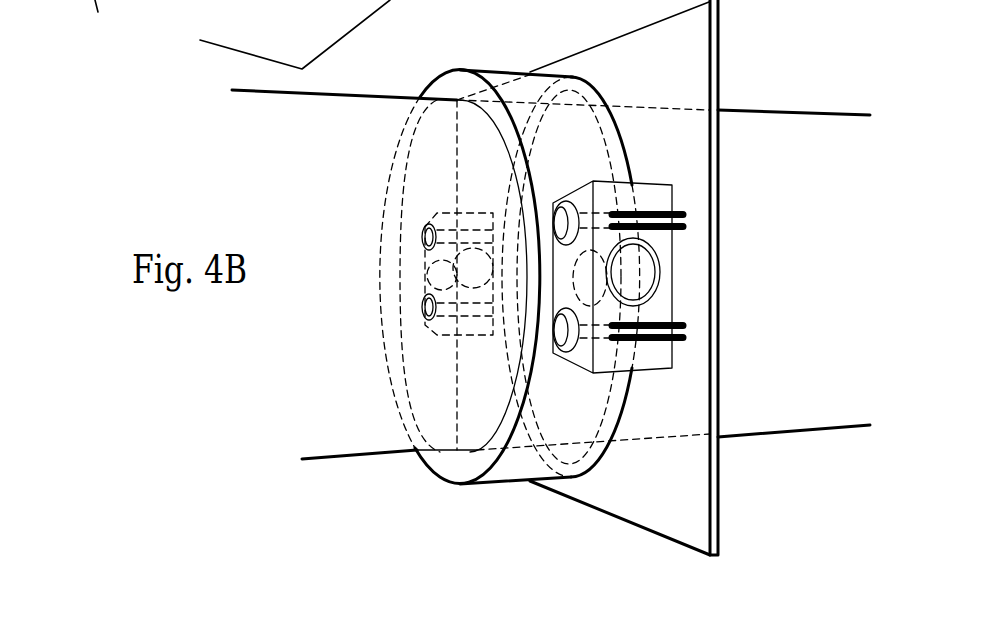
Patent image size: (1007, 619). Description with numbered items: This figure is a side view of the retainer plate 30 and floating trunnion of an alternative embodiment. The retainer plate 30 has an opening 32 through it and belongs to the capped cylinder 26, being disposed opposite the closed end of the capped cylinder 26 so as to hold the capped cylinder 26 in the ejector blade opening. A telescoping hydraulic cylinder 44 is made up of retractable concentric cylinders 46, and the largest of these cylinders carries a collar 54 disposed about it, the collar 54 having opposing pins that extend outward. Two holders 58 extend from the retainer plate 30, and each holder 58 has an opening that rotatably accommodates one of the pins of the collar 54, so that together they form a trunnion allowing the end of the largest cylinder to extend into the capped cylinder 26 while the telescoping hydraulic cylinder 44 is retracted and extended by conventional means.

The capped cylinder 26 is at (793, 110).
The retainer plate 30 is at (686, 77).
The opening 32 is at (593, 427).
The telescoping hydraulic cylinder 44 is at (362, 458).
The retractable concentric cylinders 46 is at (158, 0).
The collar 54 is at (517, 72).
The holders 58 is at (647, 184).